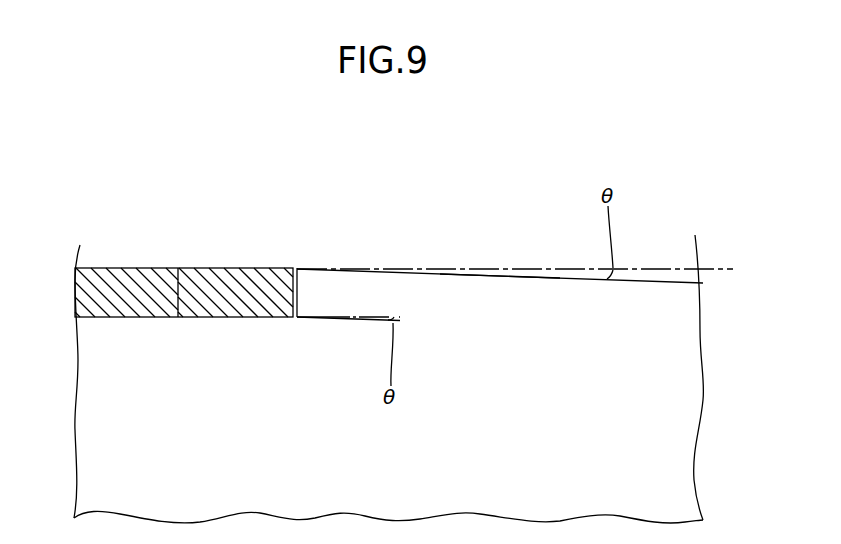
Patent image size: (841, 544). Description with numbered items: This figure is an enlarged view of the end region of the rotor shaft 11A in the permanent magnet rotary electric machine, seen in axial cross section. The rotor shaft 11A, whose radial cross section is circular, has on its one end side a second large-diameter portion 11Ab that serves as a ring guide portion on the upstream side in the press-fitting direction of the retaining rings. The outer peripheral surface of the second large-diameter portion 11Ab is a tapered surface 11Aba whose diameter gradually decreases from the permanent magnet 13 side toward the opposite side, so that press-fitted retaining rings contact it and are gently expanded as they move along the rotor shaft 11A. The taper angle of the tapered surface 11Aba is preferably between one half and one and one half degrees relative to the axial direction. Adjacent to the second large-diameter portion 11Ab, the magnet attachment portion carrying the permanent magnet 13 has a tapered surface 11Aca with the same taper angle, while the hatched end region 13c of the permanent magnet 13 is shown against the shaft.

The rotor shaft 11A is at (658, 251).
The second large-diameter portion 11Ab is at (307, 269).
The tapered surface 11Aba is at (503, 276).
The tapered surface 11Aca is at (286, 276).
The permanent magnet 13 is at (184, 246).
The seal member end portion 13c is at (145, 268).